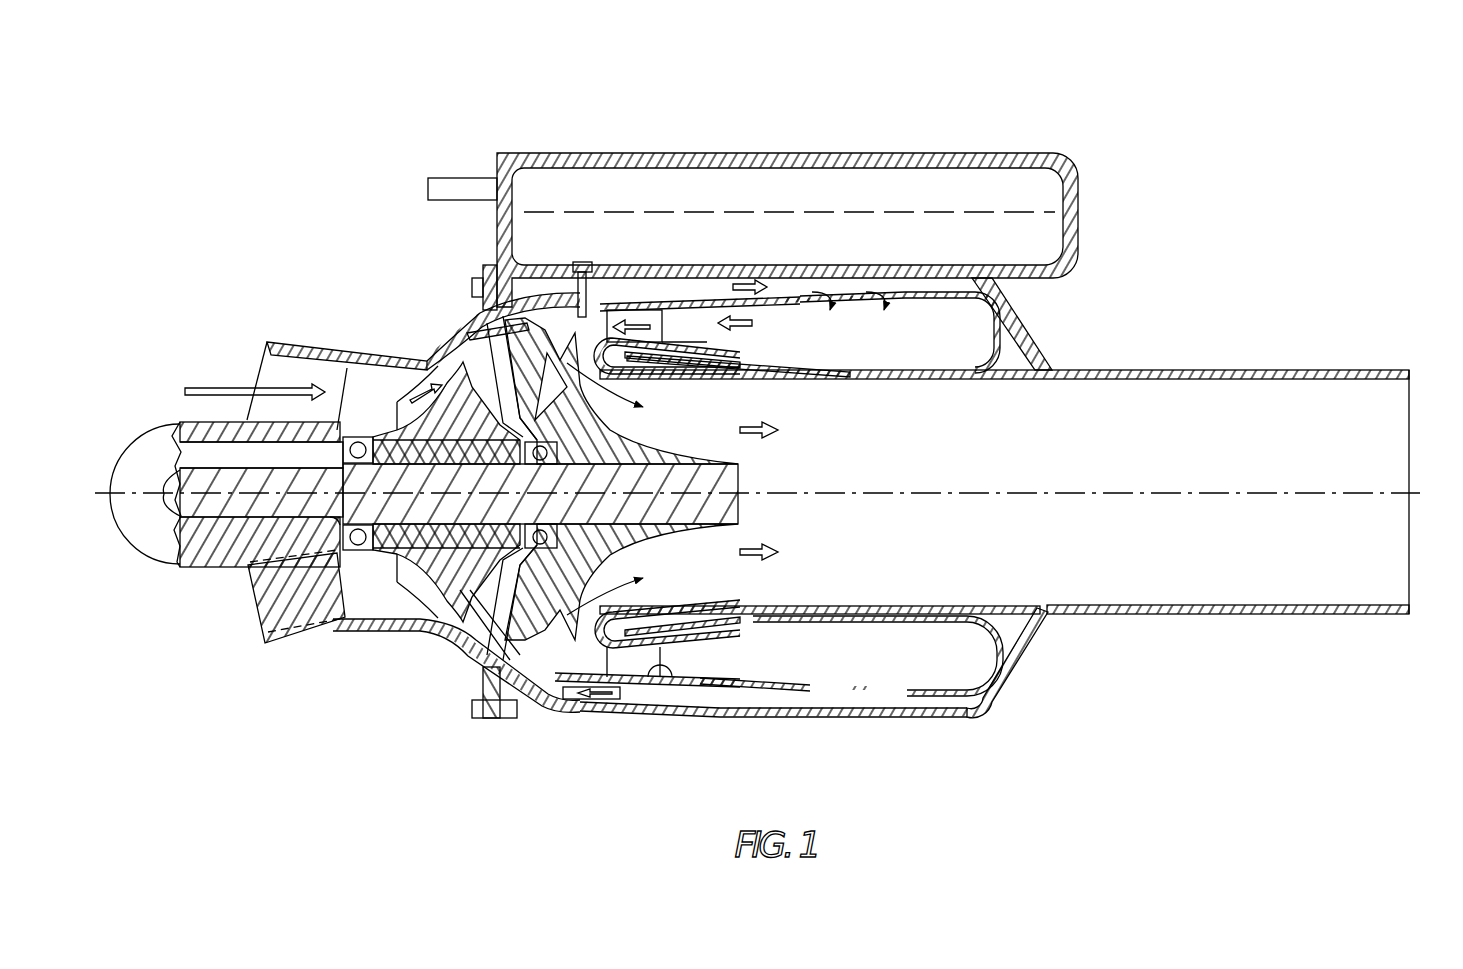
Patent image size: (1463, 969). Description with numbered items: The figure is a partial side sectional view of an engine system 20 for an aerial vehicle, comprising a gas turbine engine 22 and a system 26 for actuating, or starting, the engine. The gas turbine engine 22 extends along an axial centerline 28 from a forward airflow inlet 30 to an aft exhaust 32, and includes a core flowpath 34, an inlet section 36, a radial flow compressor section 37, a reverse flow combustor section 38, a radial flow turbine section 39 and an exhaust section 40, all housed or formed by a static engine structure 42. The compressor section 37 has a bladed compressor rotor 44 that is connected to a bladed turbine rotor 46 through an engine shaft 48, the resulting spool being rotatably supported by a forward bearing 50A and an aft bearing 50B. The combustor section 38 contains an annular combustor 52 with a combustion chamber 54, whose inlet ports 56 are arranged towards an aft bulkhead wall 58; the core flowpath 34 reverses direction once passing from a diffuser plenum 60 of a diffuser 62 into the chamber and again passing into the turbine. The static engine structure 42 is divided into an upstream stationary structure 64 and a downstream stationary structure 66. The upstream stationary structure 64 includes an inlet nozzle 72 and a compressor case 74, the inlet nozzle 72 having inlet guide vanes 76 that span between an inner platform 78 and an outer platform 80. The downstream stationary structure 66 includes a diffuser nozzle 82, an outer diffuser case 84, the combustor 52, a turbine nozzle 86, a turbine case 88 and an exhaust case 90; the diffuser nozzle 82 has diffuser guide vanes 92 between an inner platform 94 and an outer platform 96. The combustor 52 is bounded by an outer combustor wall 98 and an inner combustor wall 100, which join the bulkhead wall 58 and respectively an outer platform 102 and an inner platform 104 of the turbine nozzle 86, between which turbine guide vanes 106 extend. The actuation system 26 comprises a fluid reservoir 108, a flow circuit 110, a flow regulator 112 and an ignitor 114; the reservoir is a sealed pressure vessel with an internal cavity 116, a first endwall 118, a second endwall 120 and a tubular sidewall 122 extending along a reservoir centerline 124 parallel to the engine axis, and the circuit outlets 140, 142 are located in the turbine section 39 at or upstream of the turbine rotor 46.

The engine system 20 is at (275, 105).
The gas turbine engine 22 is at (215, 207).
The system for actuating operation of the gas turbine engine 26 is at (1115, 160).
The axial centerline 28 is at (97, 520).
The airflow inlet 30 is at (258, 356).
The exhaust 32 is at (1409, 555).
The core flowpath 34 is at (370, 380).
The inlet section 36 is at (292, 330).
The compressor section 37 is at (412, 352).
The combustor section 38 is at (940, 290).
The turbine section 39 is at (541, 655).
The exhaust section 40 is at (1222, 625).
The static engine structure 42 is at (1215, 340).
The compressor rotor 44 is at (418, 633).
The turbine rotor 46 is at (648, 538).
The engine shaft 48 is at (738, 510).
The forward bearing 50A is at (358, 550).
The aft bearing 50B is at (533, 537).
The combustor 52 is at (1003, 366).
The combustion chamber 54 is at (929, 344).
The inlet ports 56 is at (882, 298).
The bulkhead wall 58 is at (1000, 330).
The diffuser plenum 60 is at (712, 290).
The diffuser 62 is at (603, 722).
The upstream stationary structure 64 is at (288, 665).
The downstream stationary structure 66 is at (1062, 640).
The inlet nozzle 72 is at (252, 343).
The compressor case 74 is at (437, 335).
The inlet guide vanes 76 is at (265, 382).
The inner platform 78 is at (283, 430).
The outer platform 80 is at (318, 340).
The diffuser nozzle 82 is at (640, 700).
The outer diffuser case 84 is at (787, 718).
The turbine nozzle 86 is at (688, 660).
The turbine case 88 is at (855, 606).
The exhaust case 90 is at (1200, 605).
The diffuser guide vanes 92 is at (548, 688).
The inner platform 94 is at (582, 668).
The outer platform 96 is at (596, 712).
The outer combustor wall 98 is at (920, 698).
The inner combustor wall 100 is at (940, 617).
The outer platform 102 is at (658, 660).
The inner platform 104 is at (627, 622).
The turbine guide vanes 106 is at (690, 643).
The fluid reservoir 108 is at (920, 150).
The flow circuit 110 is at (598, 300).
The flow regulator 112 is at (577, 258).
The ignitor 114 is at (460, 178).
The internal cavity 116 is at (621, 204).
The first endwall 118 is at (497, 220).
The second endwall 120 is at (1080, 205).
The tubular sidewall 122 is at (820, 150).
The reservoir centerline 124 is at (975, 210).
The circuit outlet 140 is at (662, 347).
The circuit outlet 142 is at (682, 357).